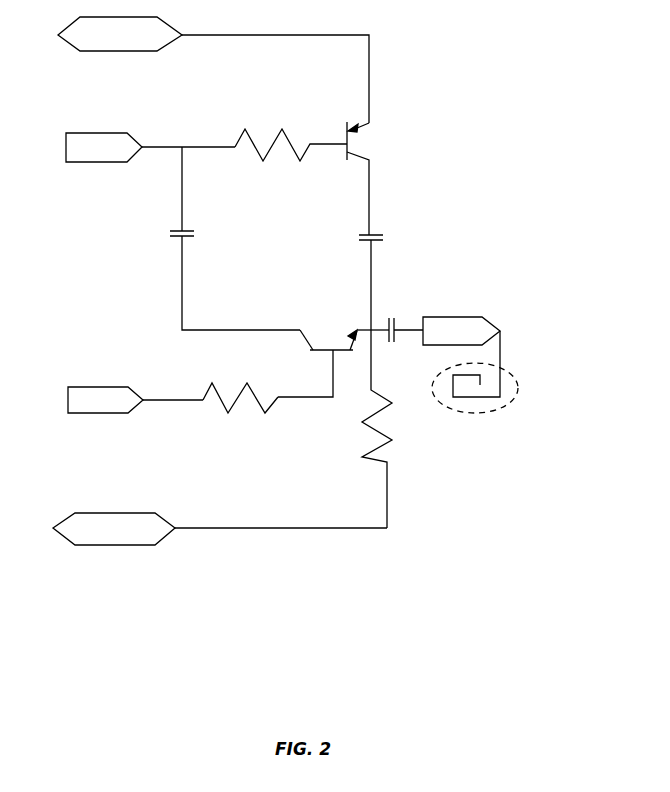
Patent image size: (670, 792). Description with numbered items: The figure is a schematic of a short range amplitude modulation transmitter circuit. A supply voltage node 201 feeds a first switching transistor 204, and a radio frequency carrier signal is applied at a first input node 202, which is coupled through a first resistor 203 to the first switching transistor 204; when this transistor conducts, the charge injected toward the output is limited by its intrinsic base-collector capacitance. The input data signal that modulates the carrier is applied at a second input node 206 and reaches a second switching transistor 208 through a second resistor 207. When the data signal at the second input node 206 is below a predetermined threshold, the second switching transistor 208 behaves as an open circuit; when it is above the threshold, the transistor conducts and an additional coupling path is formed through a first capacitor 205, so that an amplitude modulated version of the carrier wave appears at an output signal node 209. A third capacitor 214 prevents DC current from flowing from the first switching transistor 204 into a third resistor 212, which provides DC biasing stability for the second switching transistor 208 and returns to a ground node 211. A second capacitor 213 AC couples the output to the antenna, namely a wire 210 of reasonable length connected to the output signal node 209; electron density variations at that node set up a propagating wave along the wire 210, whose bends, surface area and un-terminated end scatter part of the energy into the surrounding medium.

The supply voltage node (tx_vcc) 201 is at (92, 17).
The first input node (rf_in) 202 is at (90, 133).
The first resistor (R1) 203 is at (240, 130).
The first switching transistor (Q1) 204 is at (345, 128).
The first capacitor (C1) 205 is at (172, 236).
The second input node (tx_in) 206 is at (95, 387).
The second resistor (R2) 207 is at (210, 385).
The second switching transistor (Q2) 208 is at (307, 343).
The output signal node (tx_out) 209 is at (465, 317).
The wire (W1) 210 is at (500, 365).
The ground node (tx_vss) 211 is at (92, 513).
The third resistor (R3) 212 is at (364, 456).
The second capacitor (C2) 213 is at (397, 322).
The third capacitor (C3) 214 is at (385, 240).